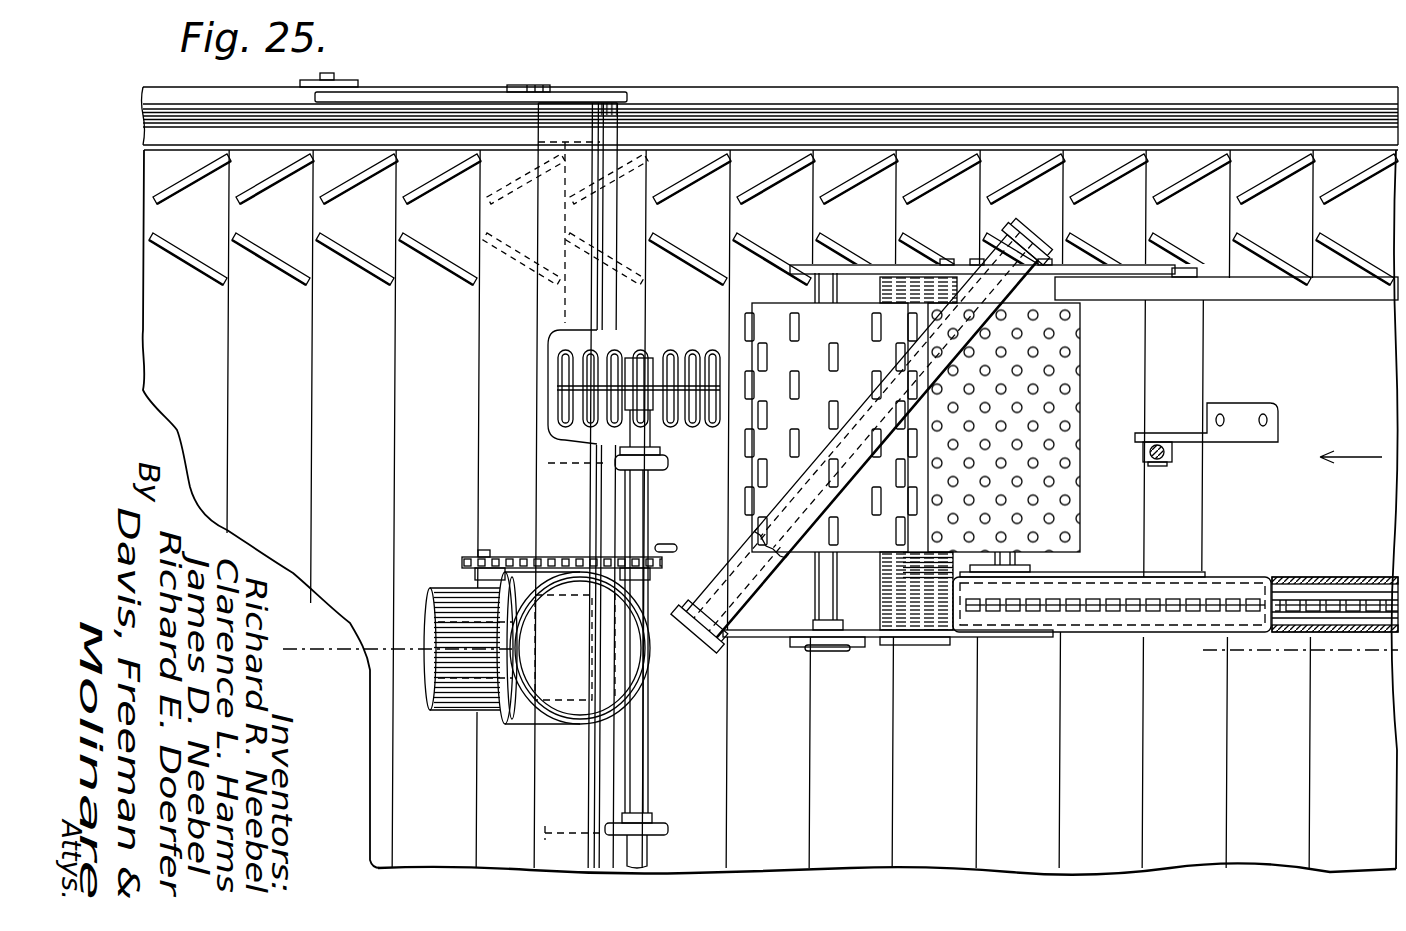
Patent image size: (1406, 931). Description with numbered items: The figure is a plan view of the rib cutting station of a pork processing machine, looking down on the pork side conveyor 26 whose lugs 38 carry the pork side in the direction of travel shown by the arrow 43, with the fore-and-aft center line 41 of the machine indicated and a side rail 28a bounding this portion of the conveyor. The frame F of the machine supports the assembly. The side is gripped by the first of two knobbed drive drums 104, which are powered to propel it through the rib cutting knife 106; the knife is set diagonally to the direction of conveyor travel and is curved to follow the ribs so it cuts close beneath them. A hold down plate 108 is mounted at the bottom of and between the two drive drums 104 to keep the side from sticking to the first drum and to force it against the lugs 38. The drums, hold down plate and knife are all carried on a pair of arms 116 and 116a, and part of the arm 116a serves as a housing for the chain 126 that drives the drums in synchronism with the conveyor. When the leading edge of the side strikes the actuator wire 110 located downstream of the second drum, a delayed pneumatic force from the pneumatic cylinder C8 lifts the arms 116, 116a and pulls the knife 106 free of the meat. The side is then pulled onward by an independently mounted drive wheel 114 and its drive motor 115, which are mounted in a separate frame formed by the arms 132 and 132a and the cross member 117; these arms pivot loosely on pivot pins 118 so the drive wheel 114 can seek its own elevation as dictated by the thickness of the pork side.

The pork side conveyor 26 is at (295, 359).
The frame rail F is at (933, 95).
The side rail 28a is at (1103, 117).
The lugs 38 is at (349, 198).
The pivot pins 118 is at (332, 76).
The arm 132 is at (427, 98).
The arm 132a is at (668, 830).
The cross member 117 is at (545, 322).
The drive wheel 114 is at (690, 324).
The actuator wire 110 is at (667, 553).
The drive motor 115 is at (625, 673).
The fore-and-aft center line 41 is at (353, 652).
The knobbed drive drums 104 is at (777, 312).
The arm 116 is at (1100, 285).
The rib cutting knife 106 is at (760, 565).
The hold down plate 108 is at (910, 605).
The arm 116a is at (930, 637).
The chain 126 is at (1300, 605).
The pneumatic cylinder C8 is at (1160, 445).
The arrow 43 is at (1352, 457).